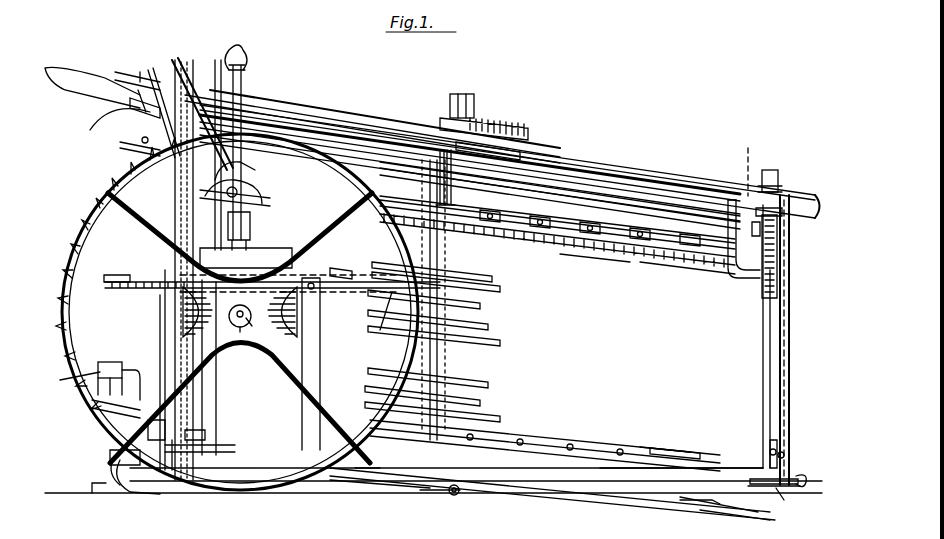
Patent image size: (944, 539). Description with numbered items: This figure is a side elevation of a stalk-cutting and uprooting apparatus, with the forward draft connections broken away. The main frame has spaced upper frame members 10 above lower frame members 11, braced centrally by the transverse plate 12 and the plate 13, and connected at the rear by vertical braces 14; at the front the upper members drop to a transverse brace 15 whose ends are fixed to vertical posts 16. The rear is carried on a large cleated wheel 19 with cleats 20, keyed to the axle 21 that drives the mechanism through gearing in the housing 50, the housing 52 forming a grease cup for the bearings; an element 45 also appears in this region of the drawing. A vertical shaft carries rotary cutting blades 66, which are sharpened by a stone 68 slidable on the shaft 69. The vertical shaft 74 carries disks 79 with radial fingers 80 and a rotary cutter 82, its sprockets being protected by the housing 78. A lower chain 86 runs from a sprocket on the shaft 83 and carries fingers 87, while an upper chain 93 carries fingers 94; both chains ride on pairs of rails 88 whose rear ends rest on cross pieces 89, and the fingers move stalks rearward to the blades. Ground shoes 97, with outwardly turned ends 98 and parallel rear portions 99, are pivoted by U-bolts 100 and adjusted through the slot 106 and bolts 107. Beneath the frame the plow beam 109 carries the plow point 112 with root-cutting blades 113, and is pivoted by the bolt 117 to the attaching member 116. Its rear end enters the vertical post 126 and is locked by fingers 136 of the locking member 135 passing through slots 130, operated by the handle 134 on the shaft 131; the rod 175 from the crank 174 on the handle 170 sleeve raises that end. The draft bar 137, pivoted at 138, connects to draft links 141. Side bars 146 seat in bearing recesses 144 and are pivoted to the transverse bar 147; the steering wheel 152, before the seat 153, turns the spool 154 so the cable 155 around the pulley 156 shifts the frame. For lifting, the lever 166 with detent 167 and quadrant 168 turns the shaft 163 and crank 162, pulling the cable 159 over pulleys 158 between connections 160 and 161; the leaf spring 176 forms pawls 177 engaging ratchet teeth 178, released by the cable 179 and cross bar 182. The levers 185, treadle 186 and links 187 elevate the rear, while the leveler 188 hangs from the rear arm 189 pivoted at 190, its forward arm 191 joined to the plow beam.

The upper frame members 10 is at (398, 112).
The lower frame members 11 is at (730, 462).
The transverse plate 12 is at (446, 110).
The plate 13 is at (400, 488).
The vertical braces 14 is at (212, 392).
The transverse brace 15 is at (758, 286).
The vertical posts 16 is at (768, 358).
The wheel 19 is at (76, 236).
The cleats 20 is at (64, 324).
The axle 21 is at (240, 328).
The lever 45 is at (158, 70).
The housing 50 is at (250, 372).
The housing 52 is at (256, 255).
The rotary cutting blades 66 is at (490, 274).
The sharpening stone 68 is at (333, 268).
The shaft 69 is at (338, 358).
The vertical shaft 74 is at (440, 347).
The housing 78 is at (528, 132).
The disks 79 is at (444, 298).
The radial fingers 80 is at (498, 282).
The rotary cutter 82 is at (368, 478).
The shaft 83 is at (680, 438).
The chain 86 is at (600, 450).
The fingers 87 is at (640, 448).
The rails 88 is at (594, 264).
The cross pieces 89 is at (182, 214).
The chain 93 is at (650, 262).
The fingers 94 is at (606, 262).
The shoes 97 is at (792, 478).
The outwardly turned forward ends 98 is at (806, 488).
The rear portions 99 is at (752, 488).
The U-bolts 100 is at (780, 498).
The slot 106 is at (780, 440).
The bolts 107 is at (778, 450).
The plow beam 109 is at (664, 508).
The plow point 112 is at (748, 518).
The blades 113 is at (695, 510).
The attaching member 116 is at (454, 496).
The bolt 117 is at (446, 496).
The vertical post 126 is at (160, 362).
The slots 130 is at (175, 420).
The vertical shaft 131 is at (160, 320).
The operating handle 134 is at (130, 106).
The locking member 135 is at (114, 452).
The fingers 136 is at (140, 470).
The draft bar 137 is at (100, 372).
The pivotal connection 138 is at (110, 360).
The draft links 141 is at (126, 396).
The bearing recesses 144 is at (730, 216).
The side bars 146 is at (612, 180).
The transverse bar 147 is at (464, 164).
The steering wheel 152 is at (128, 70).
The seat 153 is at (66, 92).
The spool 154 is at (118, 122).
The cable 155 is at (348, 120).
The pulley 156 is at (508, 152).
The pulleys 158 is at (780, 170).
The cable 159 is at (664, 178).
The cable connection 160 is at (784, 455).
The cable connection 161 is at (266, 170).
The crank 162 is at (268, 184).
The transverse shaft 163 is at (276, 198).
The operating lever 166 is at (230, 62).
The detent 167 is at (276, 120).
The quadrant 168 is at (256, 218).
The operating handle 170 is at (184, 60).
The crank 174 is at (178, 184).
The rod 175 is at (164, 304).
The leaf spring 176 is at (753, 167).
The ratchet pawls 177 is at (780, 214).
The ratchet teeth 178 is at (778, 238).
The cable 179 is at (634, 198).
The cross bar 182 is at (144, 140).
The levers 185 is at (146, 278).
The treadle 186 is at (108, 277).
The links 187 is at (330, 314).
The leveler 188 is at (98, 484).
The rear arm 189 is at (110, 460).
The pivot 190 is at (96, 410).
The forward arm 191 is at (206, 438).